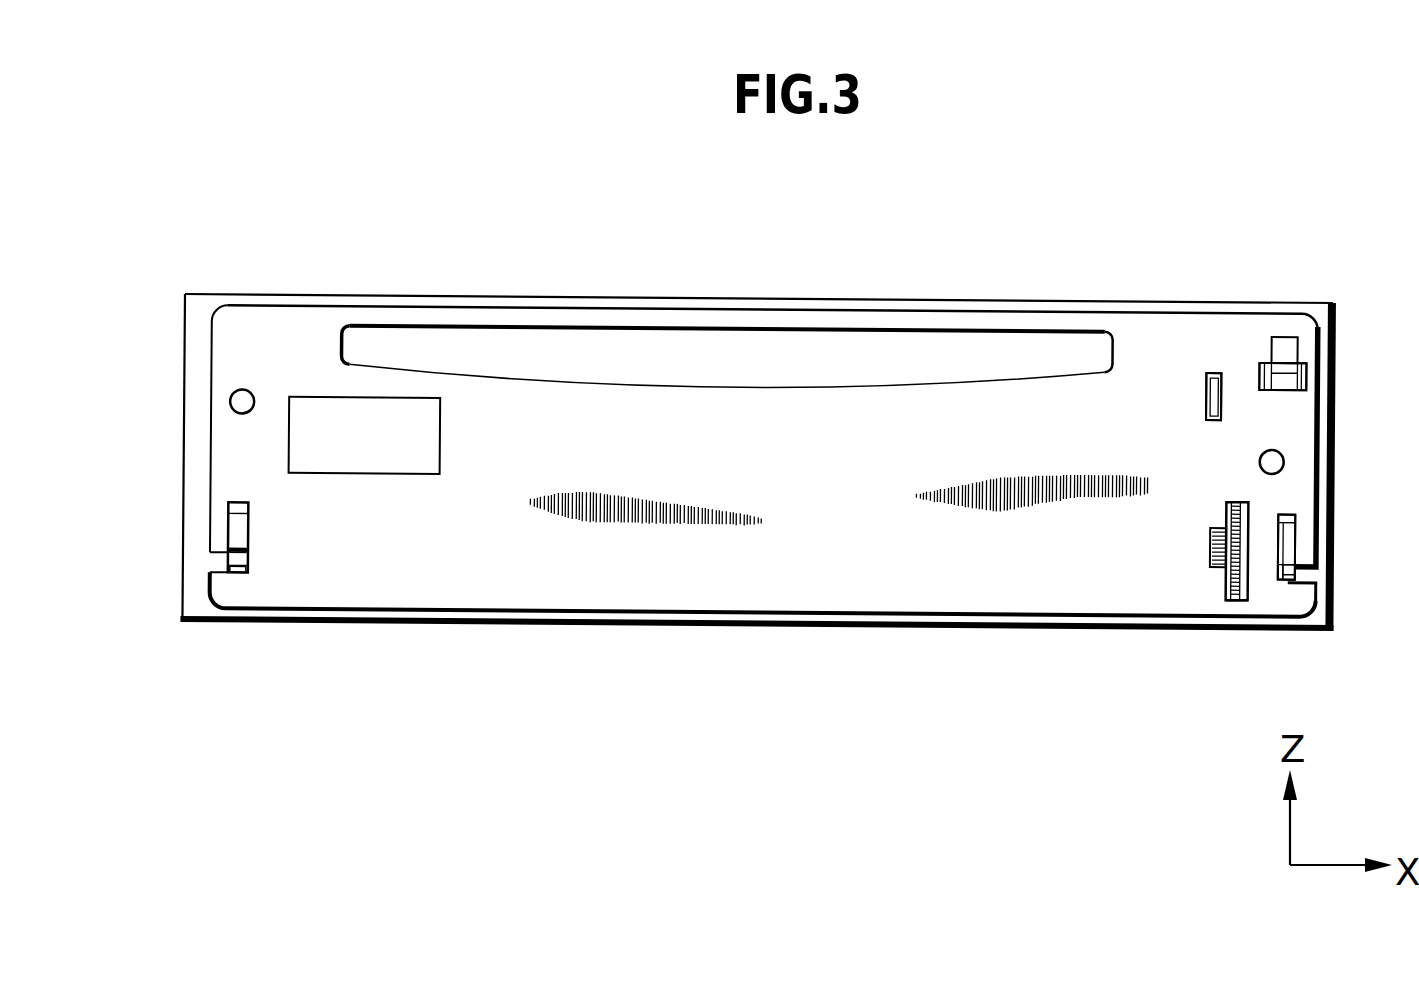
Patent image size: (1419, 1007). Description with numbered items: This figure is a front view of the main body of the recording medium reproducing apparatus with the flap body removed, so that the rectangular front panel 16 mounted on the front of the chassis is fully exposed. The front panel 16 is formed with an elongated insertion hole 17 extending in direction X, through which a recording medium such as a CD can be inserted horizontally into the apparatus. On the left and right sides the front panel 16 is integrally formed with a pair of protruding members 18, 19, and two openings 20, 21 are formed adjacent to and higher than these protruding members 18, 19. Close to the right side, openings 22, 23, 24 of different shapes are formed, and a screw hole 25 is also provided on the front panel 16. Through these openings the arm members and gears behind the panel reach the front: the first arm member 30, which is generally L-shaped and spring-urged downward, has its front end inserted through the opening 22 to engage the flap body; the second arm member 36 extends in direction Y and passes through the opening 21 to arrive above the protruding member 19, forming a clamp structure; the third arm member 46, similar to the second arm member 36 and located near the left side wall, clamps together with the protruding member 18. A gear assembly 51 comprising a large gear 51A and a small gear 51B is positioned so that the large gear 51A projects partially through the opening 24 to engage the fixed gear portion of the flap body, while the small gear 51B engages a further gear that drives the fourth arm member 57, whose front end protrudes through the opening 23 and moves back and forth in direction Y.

The front panel 16 is at (873, 300).
The insertion hole 17 is at (725, 348).
The protruding member 18 is at (243, 573).
The protruding member 19 is at (1290, 580).
The opening 20 is at (237, 502).
The opening 21 is at (1290, 518).
The opening 22 is at (1277, 337).
The opening 23 is at (1218, 372).
The opening 24 is at (1246, 600).
The screw hole 25 is at (238, 405).
The first arm member 30 is at (1292, 382).
The second arm member 36 is at (1290, 540).
The third arm member 46 is at (238, 533).
The gear assembly 51 is at (1185, 522).
The large gear 51A is at (1232, 503).
The small gear 51B is at (1215, 567).
The fourth arm member 57 is at (1208, 398).